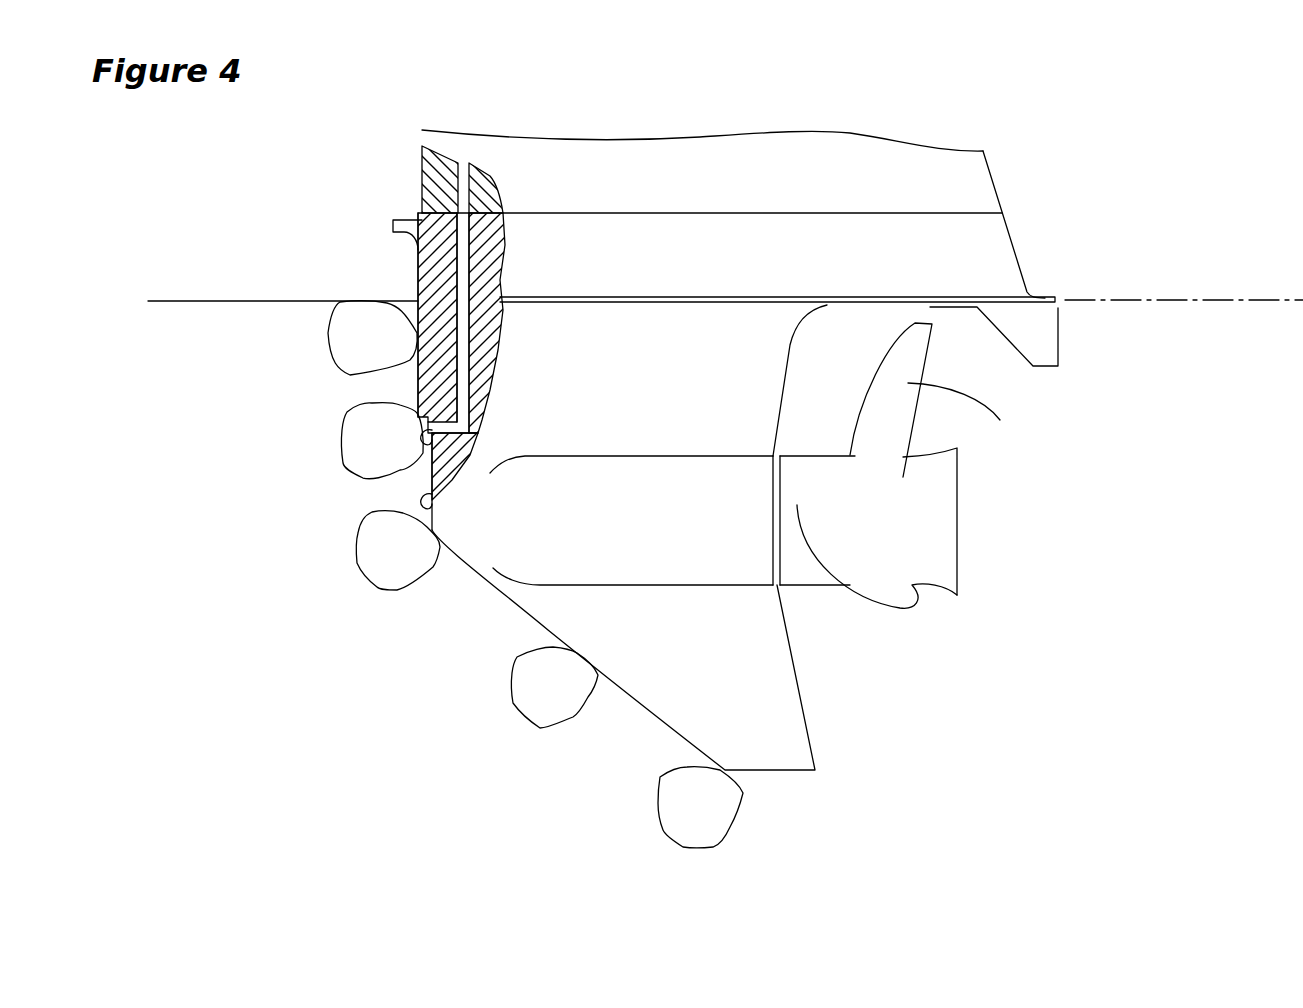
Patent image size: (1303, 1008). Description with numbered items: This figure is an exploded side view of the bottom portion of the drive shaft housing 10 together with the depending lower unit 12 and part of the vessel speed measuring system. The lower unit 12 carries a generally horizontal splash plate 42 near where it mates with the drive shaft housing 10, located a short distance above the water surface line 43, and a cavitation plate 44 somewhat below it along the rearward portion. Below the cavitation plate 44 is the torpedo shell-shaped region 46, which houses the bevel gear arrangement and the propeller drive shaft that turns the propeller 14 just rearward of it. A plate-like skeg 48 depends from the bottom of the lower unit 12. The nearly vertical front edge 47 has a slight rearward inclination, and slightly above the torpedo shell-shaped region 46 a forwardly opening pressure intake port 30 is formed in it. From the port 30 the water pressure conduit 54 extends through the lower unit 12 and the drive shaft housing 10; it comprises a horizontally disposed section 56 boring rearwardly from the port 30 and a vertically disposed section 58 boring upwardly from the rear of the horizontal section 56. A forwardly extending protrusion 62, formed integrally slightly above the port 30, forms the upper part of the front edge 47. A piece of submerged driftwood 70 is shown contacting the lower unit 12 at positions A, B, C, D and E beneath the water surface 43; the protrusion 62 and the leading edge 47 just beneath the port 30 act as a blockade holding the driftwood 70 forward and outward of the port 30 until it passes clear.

The drive shaft housing 10 is at (985, 172).
The lower unit 12 is at (1005, 268).
The propeller 14 is at (905, 381).
The pressure intake port 30 is at (456, 446).
The splash plate 42 is at (398, 238).
The water surface line 43 is at (160, 302).
The cavitation plate 44 is at (775, 296).
The torpedo shell-shaped region 46 is at (694, 567).
The front edge portion 47 is at (418, 278).
The skeg 48 is at (790, 706).
The water pressure conduit 54 is at (458, 395).
The horizontally disposed section 56 is at (470, 432).
The vertically disposed section 58 is at (458, 338).
The forwardly extending protrusion 62 is at (420, 416).
The driftwood 70 is at (338, 304).